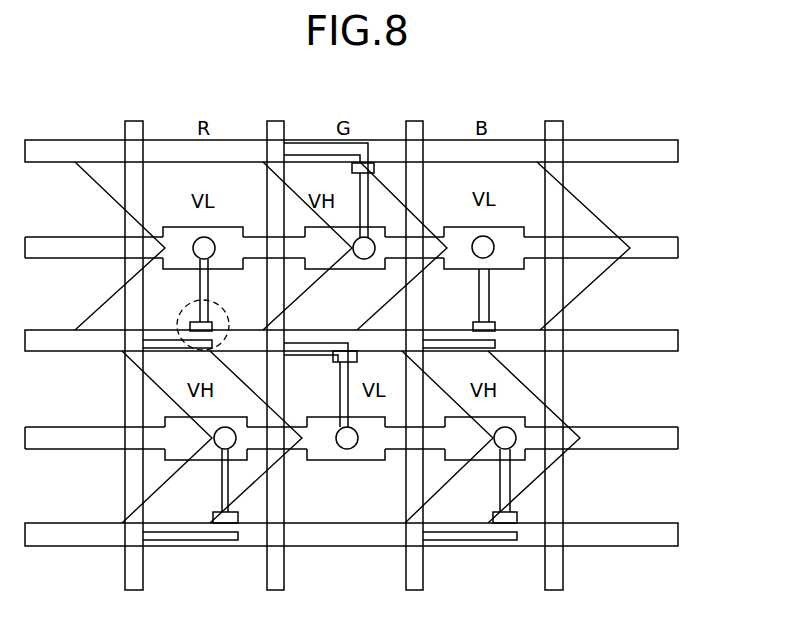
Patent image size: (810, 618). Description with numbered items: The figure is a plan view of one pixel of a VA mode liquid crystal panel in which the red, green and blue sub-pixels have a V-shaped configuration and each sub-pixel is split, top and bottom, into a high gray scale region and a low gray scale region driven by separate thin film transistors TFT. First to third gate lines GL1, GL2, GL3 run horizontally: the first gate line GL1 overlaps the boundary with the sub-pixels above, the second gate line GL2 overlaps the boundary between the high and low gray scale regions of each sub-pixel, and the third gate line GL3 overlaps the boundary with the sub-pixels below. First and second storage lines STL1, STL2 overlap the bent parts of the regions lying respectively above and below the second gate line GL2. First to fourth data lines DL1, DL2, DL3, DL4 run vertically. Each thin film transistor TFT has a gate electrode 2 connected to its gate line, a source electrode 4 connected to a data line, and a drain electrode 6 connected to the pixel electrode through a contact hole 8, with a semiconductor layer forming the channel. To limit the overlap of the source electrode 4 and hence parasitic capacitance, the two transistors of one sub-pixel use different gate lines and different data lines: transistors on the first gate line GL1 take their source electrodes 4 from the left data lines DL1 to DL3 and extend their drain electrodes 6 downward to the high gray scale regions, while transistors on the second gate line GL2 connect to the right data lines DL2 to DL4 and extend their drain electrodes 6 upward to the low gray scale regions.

The gate electrode 2 is at (181, 324).
The source electrode 4 is at (230, 325).
The drain electrode 6 is at (210, 287).
The contact hole 8 is at (210, 262).
The thin film transistor TFT is at (199, 304).
The first data line DL1 is at (132, 120).
The second data line DL2 is at (273, 120).
The third data line DL3 is at (412, 120).
The fourth data line DL4 is at (551, 120).
The first gate line GL1 is at (678, 151).
The second gate line GL2 is at (678, 340).
The third gate line GL3 is at (678, 534).
The first storage line STL1 is at (678, 247).
The second storage line STL2 is at (678, 438).